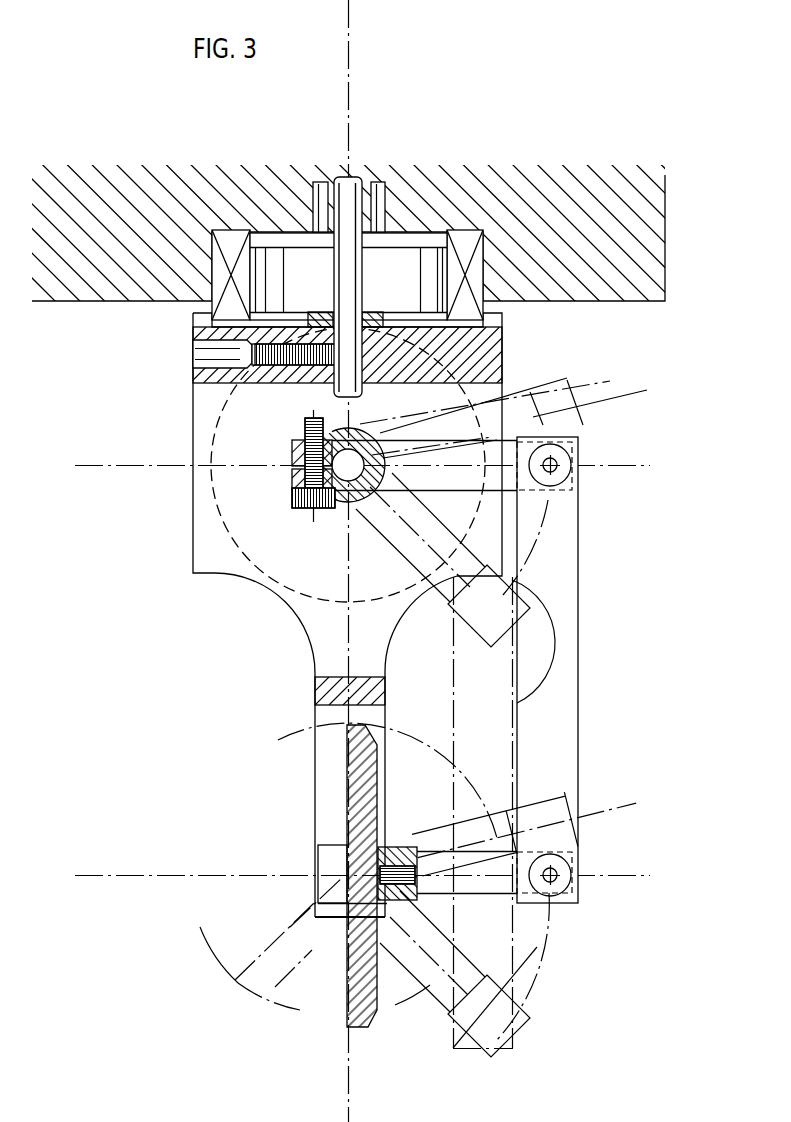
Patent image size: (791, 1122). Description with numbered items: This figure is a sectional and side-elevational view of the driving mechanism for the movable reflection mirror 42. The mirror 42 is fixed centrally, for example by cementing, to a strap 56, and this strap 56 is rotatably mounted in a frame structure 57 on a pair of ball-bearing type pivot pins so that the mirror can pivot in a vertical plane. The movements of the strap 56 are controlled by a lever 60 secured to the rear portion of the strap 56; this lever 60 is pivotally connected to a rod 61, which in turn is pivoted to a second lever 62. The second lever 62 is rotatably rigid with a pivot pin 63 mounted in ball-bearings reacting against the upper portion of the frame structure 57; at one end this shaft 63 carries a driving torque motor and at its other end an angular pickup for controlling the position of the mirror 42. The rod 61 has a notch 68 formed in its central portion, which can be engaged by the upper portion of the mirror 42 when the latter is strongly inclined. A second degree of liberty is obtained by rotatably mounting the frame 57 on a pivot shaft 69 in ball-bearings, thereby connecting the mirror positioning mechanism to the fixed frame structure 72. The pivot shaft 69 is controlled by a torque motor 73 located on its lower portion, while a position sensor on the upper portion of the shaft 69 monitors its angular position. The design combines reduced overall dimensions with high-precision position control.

The frame structure 72 is at (652, 277).
The torque motor 73 is at (428, 280).
The pivot shaft 69 is at (350, 313).
The frame structure 57 is at (492, 362).
The lever 62 is at (500, 434).
The pivot pin 63 is at (333, 498).
The notch 68 is at (531, 658).
The rod 61 is at (575, 808).
The lever 60 is at (483, 894).
The strap 56 is at (408, 903).
The movable mirror 42 is at (352, 970).